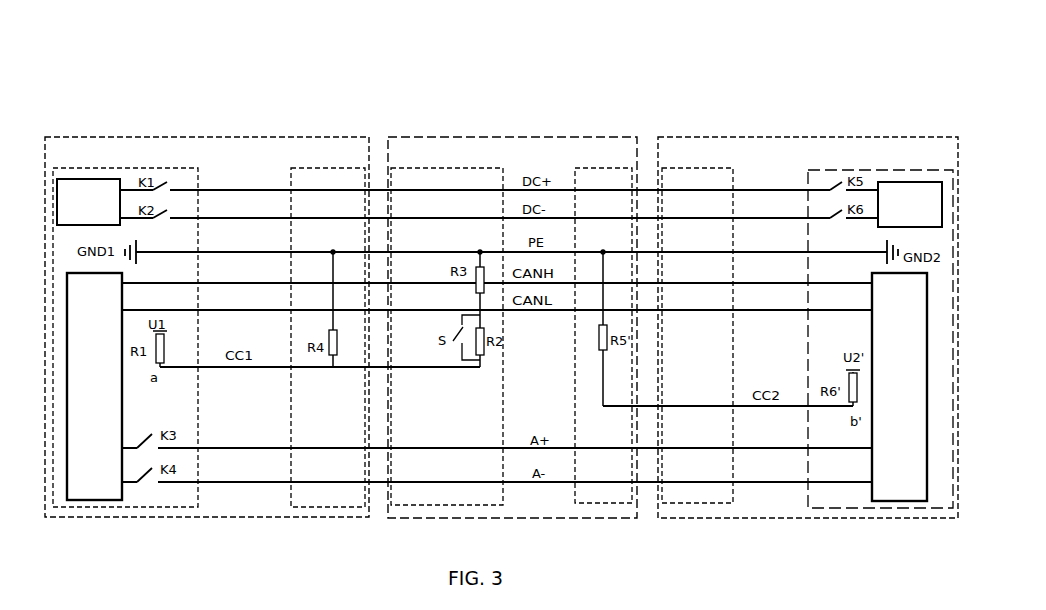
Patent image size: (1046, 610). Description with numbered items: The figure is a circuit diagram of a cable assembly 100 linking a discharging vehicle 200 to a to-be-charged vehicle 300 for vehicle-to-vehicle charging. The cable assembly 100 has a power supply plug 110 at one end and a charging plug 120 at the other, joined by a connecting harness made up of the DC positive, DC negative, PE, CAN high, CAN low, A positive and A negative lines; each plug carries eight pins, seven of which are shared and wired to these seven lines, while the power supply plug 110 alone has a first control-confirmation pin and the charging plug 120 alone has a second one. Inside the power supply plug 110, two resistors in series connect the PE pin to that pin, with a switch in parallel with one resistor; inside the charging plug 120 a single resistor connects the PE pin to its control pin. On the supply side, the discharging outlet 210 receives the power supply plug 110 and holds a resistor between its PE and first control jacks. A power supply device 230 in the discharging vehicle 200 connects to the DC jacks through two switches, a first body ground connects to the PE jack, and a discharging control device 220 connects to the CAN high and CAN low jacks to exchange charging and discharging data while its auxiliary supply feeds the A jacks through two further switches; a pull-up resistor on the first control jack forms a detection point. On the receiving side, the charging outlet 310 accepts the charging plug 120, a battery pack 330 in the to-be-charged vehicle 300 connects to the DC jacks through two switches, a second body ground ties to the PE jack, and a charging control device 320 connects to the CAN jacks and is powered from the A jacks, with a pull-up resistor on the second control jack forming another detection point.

The charging cable assembly 100 is at (518, 157).
The power supply plug 110 is at (427, 180).
The charging plug 120 is at (607, 178).
The discharging vehicle 200 is at (202, 155).
The discharging outlet 210 is at (308, 180).
The discharging control device 220 is at (125, 337).
The power supply device 230 is at (88, 202).
The to-be-charged vehicle 300 is at (793, 158).
The charging outlet 310 is at (692, 178).
The charging control device 320 is at (899, 387).
The battery pack 330 is at (880, 339).